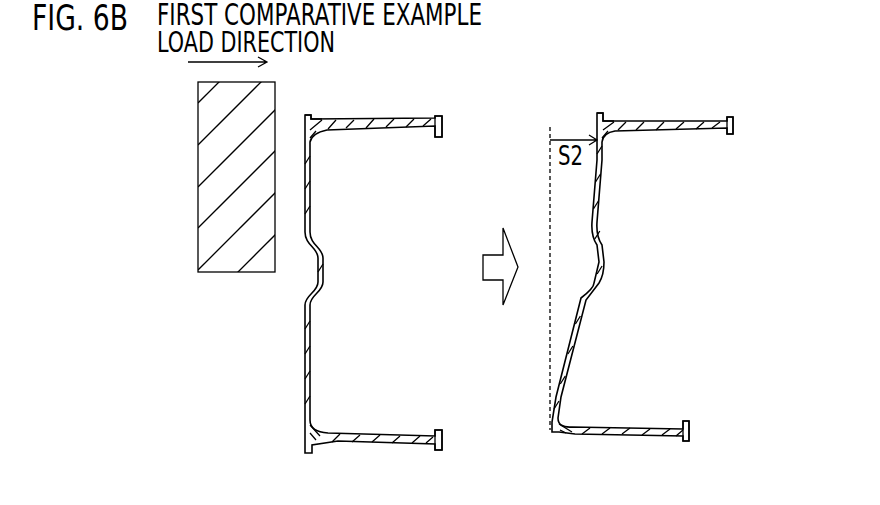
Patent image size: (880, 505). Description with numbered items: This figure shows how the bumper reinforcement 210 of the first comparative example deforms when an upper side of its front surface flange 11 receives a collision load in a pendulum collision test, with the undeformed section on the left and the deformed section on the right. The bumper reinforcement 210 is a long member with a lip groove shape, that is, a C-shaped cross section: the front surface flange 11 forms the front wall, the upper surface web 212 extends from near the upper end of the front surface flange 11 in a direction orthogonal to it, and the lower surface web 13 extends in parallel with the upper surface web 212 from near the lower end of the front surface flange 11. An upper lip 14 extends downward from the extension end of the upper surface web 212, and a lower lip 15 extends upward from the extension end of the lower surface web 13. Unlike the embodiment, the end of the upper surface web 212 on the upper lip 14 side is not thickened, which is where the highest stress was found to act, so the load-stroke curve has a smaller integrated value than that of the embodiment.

The front surface flange 11 is at (305, 338).
The lower surface web 13 is at (383, 438).
The upper lip 14 is at (443, 128).
The lower lip 15 is at (442, 431).
The bumper reinforcement 210 is at (318, 112).
The upper surface web 212 is at (370, 121).